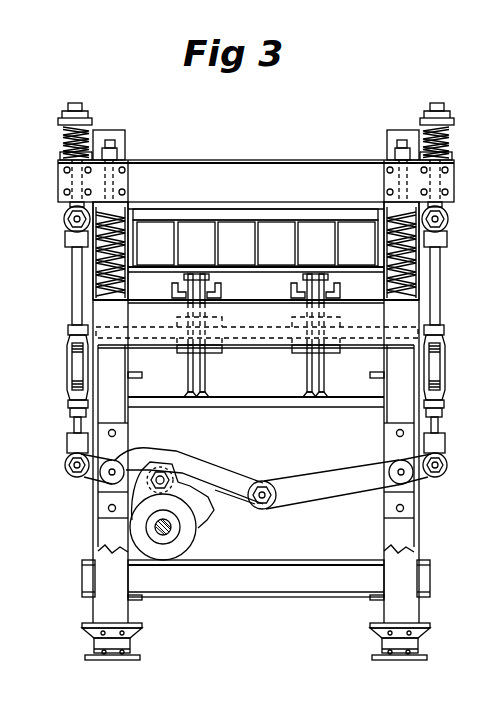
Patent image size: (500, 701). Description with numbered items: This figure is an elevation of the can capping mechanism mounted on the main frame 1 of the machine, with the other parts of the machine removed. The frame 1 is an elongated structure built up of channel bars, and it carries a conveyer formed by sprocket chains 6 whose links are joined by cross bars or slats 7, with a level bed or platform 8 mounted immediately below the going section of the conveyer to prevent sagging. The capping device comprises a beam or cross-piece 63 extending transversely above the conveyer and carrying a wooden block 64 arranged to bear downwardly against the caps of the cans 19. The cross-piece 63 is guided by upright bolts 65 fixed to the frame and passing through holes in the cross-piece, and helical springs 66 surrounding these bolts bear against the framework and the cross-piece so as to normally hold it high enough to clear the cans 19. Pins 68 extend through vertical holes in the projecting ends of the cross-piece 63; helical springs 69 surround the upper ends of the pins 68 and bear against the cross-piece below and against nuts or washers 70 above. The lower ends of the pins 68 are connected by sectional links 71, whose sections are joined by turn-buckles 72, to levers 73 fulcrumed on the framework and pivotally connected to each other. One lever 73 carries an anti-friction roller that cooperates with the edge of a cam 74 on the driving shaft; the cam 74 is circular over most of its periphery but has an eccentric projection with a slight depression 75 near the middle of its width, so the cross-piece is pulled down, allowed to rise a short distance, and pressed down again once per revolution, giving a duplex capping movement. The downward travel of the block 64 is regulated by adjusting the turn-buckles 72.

The frame 1 is at (133, 328).
The sprocket chains 6 is at (203, 396).
The cross bars or slats 7 is at (248, 268).
The level bed or platform 8 is at (172, 286).
The cans 19 is at (255, 243).
The beam or cross-piece 63 is at (256, 181).
The wooden block 64 is at (238, 203).
The upright bolts 65 is at (128, 254).
The helical springs 66 is at (120, 232).
The pins 68 is at (61, 143).
The helical springs 69 is at (60, 146).
The nuts or washers 70 is at (62, 113).
The sectional links 71 is at (77, 311).
The turn-buckles 72 is at (67, 375).
The levers 73 is at (140, 453).
The cam 74 is at (172, 511).
The depression 75 is at (202, 498).